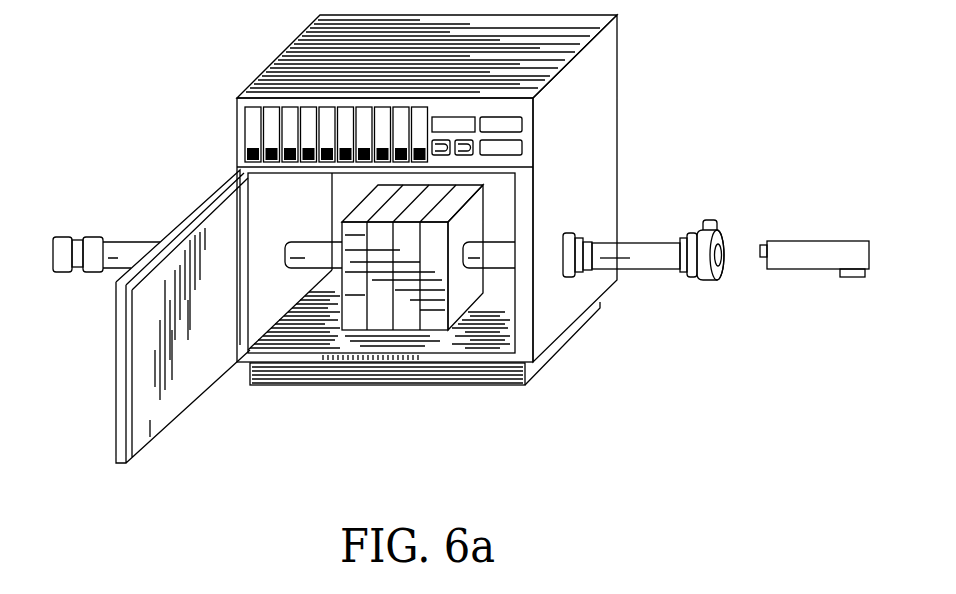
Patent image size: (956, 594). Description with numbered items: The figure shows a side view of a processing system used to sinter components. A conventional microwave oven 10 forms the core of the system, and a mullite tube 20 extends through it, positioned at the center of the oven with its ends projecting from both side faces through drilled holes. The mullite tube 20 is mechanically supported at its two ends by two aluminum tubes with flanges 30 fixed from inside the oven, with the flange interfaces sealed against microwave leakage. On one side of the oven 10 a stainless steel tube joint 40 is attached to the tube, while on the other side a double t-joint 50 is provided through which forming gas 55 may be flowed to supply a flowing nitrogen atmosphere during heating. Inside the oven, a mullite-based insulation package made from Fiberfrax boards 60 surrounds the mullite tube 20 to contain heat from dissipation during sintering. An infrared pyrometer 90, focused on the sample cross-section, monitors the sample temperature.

The microwave oven 10 is at (287, 75).
The mullite tube 20 is at (498, 258).
The aluminum tubes with flanges 30 is at (588, 232).
The stainless steel tube joint 40 is at (72, 235).
The double t-joint 50 is at (710, 282).
The forming gas 55 is at (710, 210).
The Fiberfrax boards 60 is at (410, 310).
The infrared pyrometer 90 is at (817, 240).